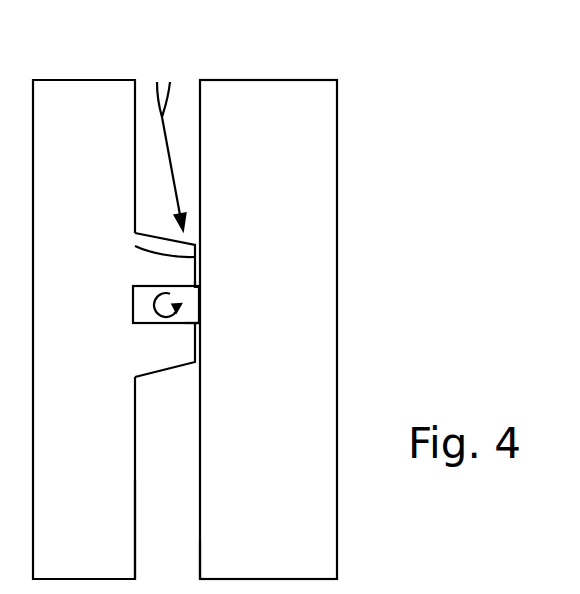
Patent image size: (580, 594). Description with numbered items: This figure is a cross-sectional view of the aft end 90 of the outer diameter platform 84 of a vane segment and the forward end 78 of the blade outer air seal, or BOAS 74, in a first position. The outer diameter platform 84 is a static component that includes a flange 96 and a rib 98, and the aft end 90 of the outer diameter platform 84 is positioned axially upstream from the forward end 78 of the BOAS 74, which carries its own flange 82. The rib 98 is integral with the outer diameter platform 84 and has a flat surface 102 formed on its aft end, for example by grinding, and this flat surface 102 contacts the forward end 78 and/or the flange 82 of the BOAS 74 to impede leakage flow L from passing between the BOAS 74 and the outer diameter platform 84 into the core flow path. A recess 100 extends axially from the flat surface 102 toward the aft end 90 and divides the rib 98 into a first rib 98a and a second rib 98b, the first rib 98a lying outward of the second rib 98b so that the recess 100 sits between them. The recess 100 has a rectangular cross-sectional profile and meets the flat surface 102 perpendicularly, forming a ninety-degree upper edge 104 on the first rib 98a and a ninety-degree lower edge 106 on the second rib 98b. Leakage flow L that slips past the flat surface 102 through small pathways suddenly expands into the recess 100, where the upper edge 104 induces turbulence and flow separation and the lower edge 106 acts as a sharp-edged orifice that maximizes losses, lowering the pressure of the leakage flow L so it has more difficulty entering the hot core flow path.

The flange 96 is at (77, 299).
The outer diameter platform 84 is at (84, 329).
The flange 82 is at (268, 308).
The BOAS 74 is at (268, 329).
The rib 98 is at (120, 249).
The first rib 98a is at (157, 275).
The second rib 98b is at (151, 341).
The flat surface 102 is at (135, 246).
The recess 100 is at (133, 297).
The upper edge 104 is at (200, 287).
The lower edge 106 is at (200, 322).
The aft end 90 is at (137, 567).
The forward end 78 is at (200, 558).
The leakage flow L is at (171, 150).